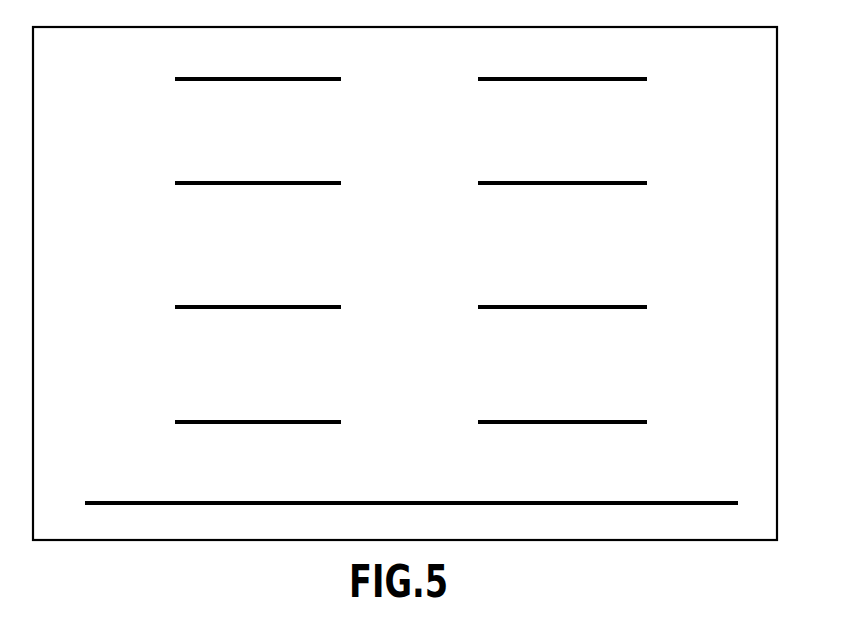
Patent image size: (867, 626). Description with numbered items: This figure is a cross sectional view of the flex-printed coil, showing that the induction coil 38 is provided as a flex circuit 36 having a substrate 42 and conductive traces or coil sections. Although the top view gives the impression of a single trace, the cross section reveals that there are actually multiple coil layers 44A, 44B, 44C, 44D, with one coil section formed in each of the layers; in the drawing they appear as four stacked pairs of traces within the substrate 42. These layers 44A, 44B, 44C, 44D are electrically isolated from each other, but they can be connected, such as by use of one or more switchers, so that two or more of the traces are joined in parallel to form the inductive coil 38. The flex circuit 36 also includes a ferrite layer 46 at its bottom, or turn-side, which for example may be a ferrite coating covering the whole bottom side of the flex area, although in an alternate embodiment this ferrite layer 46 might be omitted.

The flex circuit 36 is at (777, 113).
The substrate 42 is at (760, 329).
The first coil layer 44A is at (387, 80).
The second coil layer 44B is at (387, 184).
The third coil layer 44C is at (387, 308).
The fourth coil layer 44D is at (387, 423).
The ferrite layer 46 is at (81, 508).
The induction coil 38 is at (612, 620).